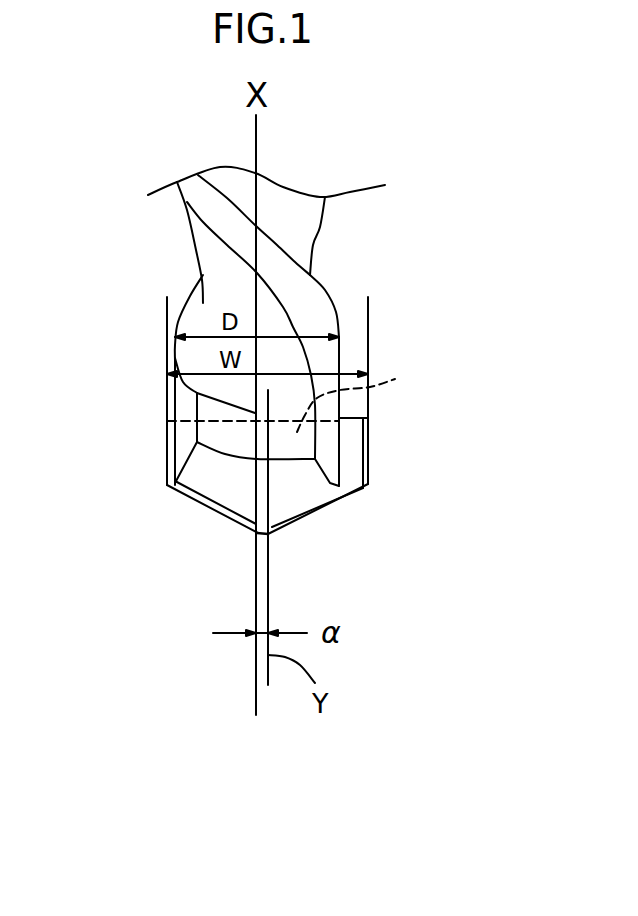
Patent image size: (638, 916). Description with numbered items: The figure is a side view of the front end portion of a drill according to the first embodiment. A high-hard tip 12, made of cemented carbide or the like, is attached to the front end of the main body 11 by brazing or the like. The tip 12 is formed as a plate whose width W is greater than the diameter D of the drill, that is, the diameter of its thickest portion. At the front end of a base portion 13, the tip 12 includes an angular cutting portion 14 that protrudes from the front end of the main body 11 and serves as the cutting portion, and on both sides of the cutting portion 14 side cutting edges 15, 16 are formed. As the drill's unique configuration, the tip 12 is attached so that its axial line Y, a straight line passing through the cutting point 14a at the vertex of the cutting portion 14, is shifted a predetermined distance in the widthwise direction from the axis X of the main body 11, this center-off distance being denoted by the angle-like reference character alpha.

The main body 11 is at (322, 225).
The high-hard tip 12 is at (222, 526).
The base portion 13 is at (361, 395).
The cutting portion 14 is at (306, 517).
The cutting point 14a is at (268, 538).
The side cutting edge 15 is at (167, 450).
The side cutting edge 16 is at (369, 450).